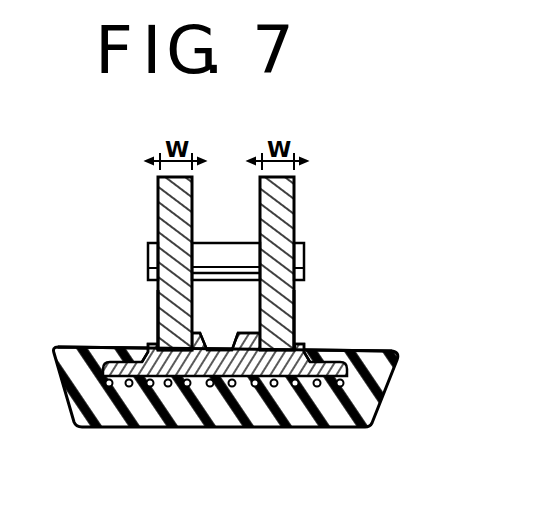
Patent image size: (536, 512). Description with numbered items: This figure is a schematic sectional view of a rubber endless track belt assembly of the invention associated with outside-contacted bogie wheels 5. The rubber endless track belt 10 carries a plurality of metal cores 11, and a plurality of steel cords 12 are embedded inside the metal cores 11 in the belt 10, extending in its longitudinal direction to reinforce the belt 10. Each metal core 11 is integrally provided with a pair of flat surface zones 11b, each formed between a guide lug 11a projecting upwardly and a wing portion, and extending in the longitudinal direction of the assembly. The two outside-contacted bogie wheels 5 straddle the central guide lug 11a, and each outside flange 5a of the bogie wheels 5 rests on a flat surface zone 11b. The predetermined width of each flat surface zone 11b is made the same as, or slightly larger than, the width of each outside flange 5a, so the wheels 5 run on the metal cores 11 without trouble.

The outside-contacted bogie wheels 5 is at (300, 214).
The outside flange 5a is at (316, 303).
The rubber endless track belt 10 is at (397, 352).
The metal core 11 is at (233, 372).
The guide lug 11a is at (237, 333).
The flat surface zone 11b is at (308, 333).
The steel cords 12 is at (372, 424).